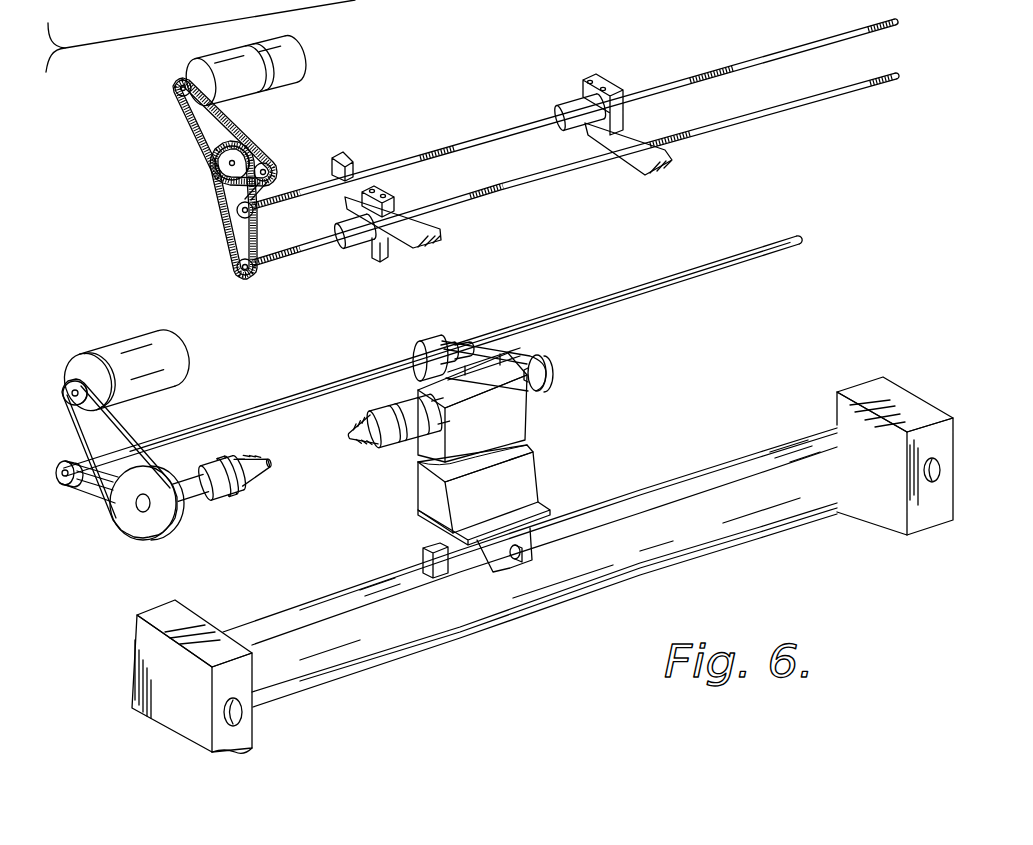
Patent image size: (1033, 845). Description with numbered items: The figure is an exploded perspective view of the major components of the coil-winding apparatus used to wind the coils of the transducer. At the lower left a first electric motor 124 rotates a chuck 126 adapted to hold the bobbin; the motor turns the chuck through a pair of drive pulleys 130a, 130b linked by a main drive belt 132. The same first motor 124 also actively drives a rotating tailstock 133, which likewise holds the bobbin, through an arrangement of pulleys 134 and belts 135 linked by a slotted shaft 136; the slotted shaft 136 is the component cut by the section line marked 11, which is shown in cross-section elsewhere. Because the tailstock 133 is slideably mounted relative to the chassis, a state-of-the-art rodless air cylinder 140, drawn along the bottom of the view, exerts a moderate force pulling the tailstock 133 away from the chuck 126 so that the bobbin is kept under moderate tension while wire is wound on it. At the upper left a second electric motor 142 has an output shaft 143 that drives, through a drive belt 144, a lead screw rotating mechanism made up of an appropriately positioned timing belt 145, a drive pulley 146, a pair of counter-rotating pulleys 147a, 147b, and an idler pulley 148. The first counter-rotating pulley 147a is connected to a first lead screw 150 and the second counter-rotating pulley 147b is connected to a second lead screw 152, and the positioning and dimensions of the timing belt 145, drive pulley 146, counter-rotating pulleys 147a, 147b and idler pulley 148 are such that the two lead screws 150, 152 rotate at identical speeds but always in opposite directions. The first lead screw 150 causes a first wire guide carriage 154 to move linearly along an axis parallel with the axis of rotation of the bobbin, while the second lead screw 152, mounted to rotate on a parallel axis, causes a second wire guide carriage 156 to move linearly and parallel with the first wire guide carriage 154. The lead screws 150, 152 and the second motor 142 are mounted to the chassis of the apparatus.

The section line 11- 11 is at (313, 378).
The first electric motor 124 is at (133, 339).
The chuck 126 is at (246, 490).
The drive pulley 130a is at (65, 386).
The drive pulley 130b is at (145, 530).
The main drive belt 132 is at (127, 427).
The rotating tailstock 133 is at (395, 444).
The pulleys 134 is at (60, 488).
The belts 135 is at (98, 510).
The slotted shaft 136 is at (672, 278).
The rodless air cylinder 140 is at (667, 484).
The second electric motor 142 is at (298, 56).
The output shaft 143 is at (176, 86).
The drive belt 144 is at (196, 117).
The timing belt 145 is at (254, 150).
The drive pulley 146 is at (222, 178).
The first counter-rotating pulley 147a is at (244, 274).
The second counter-rotating pulley 147b is at (253, 212).
The idler pulley 148 is at (283, 174).
The first lead screw 150 is at (790, 103).
The second lead screw 152 is at (780, 57).
The first wire guide carriage 154 is at (396, 247).
The second wire guide carriage 156 is at (664, 164).